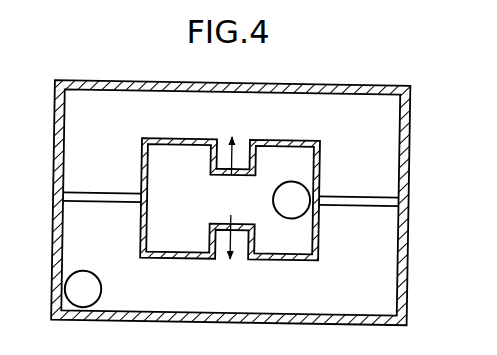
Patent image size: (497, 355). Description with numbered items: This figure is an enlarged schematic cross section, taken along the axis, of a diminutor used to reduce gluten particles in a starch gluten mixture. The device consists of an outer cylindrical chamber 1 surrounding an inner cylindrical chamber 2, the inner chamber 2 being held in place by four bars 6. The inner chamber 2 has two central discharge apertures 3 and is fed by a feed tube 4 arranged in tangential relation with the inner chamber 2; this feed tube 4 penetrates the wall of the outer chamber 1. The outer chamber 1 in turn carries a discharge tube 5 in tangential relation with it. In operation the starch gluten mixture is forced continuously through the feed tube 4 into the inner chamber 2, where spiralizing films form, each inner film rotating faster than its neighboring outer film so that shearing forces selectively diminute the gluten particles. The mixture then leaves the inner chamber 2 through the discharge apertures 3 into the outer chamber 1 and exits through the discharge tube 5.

The outer cylindrical chamber 1 is at (412, 103).
The inner cylindrical chamber 2 is at (321, 174).
The central discharge apertures 3 is at (233, 173).
The feed tube 4 is at (289, 214).
The discharge tube 5 is at (100, 290).
The bars 6 is at (117, 193).